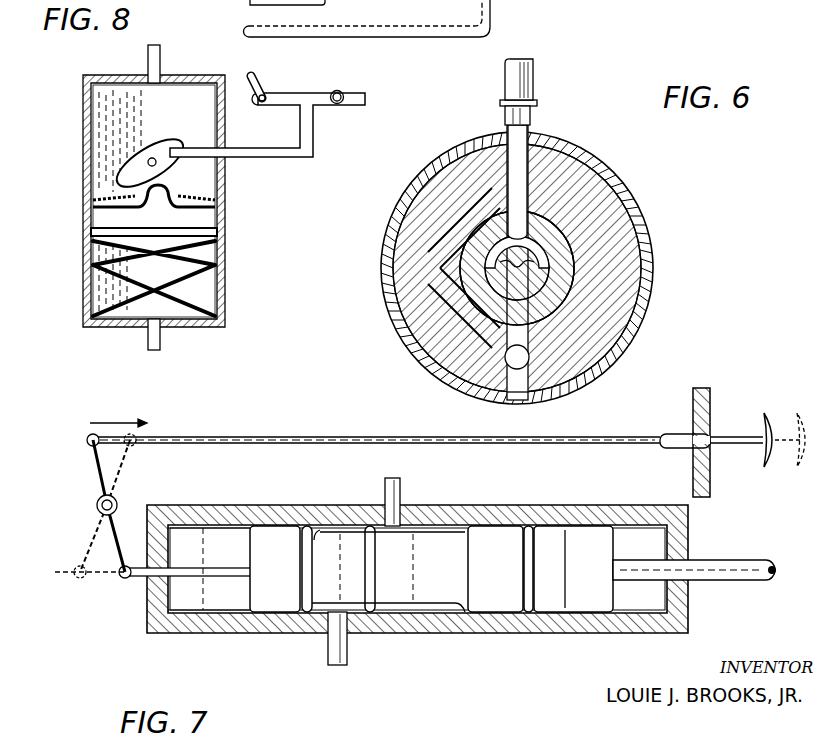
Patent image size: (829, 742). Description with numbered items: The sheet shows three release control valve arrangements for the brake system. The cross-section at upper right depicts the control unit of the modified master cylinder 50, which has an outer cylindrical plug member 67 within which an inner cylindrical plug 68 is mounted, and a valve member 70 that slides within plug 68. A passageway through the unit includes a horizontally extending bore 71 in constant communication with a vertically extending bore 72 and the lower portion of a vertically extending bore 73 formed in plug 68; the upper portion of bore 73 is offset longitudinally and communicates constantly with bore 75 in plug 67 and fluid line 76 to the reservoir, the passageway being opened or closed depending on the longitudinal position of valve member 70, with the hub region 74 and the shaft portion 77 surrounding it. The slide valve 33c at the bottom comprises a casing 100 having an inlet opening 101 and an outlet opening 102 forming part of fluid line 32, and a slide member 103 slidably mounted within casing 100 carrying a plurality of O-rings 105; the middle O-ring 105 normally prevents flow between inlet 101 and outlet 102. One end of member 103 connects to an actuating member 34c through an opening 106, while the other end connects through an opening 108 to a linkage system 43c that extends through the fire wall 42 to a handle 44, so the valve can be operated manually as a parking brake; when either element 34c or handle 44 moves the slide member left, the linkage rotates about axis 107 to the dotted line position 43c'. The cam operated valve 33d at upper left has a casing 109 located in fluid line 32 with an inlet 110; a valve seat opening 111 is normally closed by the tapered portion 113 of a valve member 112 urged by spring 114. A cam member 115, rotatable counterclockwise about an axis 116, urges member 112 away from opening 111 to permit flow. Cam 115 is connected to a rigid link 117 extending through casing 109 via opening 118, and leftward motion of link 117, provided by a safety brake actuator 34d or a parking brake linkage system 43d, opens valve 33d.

In FIG. 8, the fluid line 32 is at (160, 64).
In FIG. 7, the fluid line 32 is at (403, 496).
In FIG. 7, the slide valve 33c is at (433, 660).
In FIG. 8, the release control valve 33d is at (244, 249).
In FIG. 7, the actuating member 34c is at (752, 586).
In FIG. 8, the safety brake actuator 34d is at (340, 102).
In FIG. 7, the fire wall 42 is at (712, 406).
In FIG. 7, the linkage system 43c is at (425, 423).
In FIG. 7, the dotted line position of linkage system 43c' is at (139, 506).
In FIG. 8, the parking brake linkage system 43d is at (263, 90).
In FIG. 7, the handle 44 is at (770, 470).
In FIG. 6, the modified master cylinder 50 is at (648, 311).
In FIG. 6, the outer cylindrical plug member 67 is at (622, 204).
In FIG. 6, the inner cylindrical plug 68 is at (582, 291).
In FIG. 6, the valve member 70 is at (530, 291).
In FIG. 6, the horizontally extending bore 71 is at (500, 391).
In FIG. 6, the vertically extending bore 72 is at (548, 396).
In FIG. 6, the vertically extending bore 73 is at (498, 208).
In FIG. 6, the hub bearing 74 is at (568, 255).
In FIG. 6, the bore 75 is at (532, 140).
In FIG. 6, the fluid line 76 is at (536, 78).
In FIG. 6, the hub 77 is at (560, 224).
In FIG. 7, the casing 100 is at (246, 646).
In FIG. 7, the inlet opening 101 is at (353, 641).
In FIG. 7, the outlet opening 102 is at (388, 543).
In FIG. 7, the slide member 103 is at (193, 639).
In FIG. 7, the O-rings 105 is at (304, 560).
In FIG. 7, the opening 106 is at (694, 555).
In FIG. 7, the axis 107 is at (95, 508).
In FIG. 7, the opening 108 is at (130, 580).
In FIG. 8, the casing 109 is at (219, 231).
In FIG. 8, the inlet 110 is at (148, 341).
In FIG. 8, the valve seat opening 111 is at (172, 193).
In FIG. 8, the valve member 112 is at (164, 226).
In FIG. 8, the tapered portion 113 is at (163, 199).
In FIG. 8, the spring 114 is at (214, 281).
In FIG. 8, the cam member 115 is at (150, 150).
In FIG. 8, the axis 116 is at (140, 158).
In FIG. 8, the rigid link 117 is at (300, 158).
In FIG. 8, the opening 118 is at (222, 148).